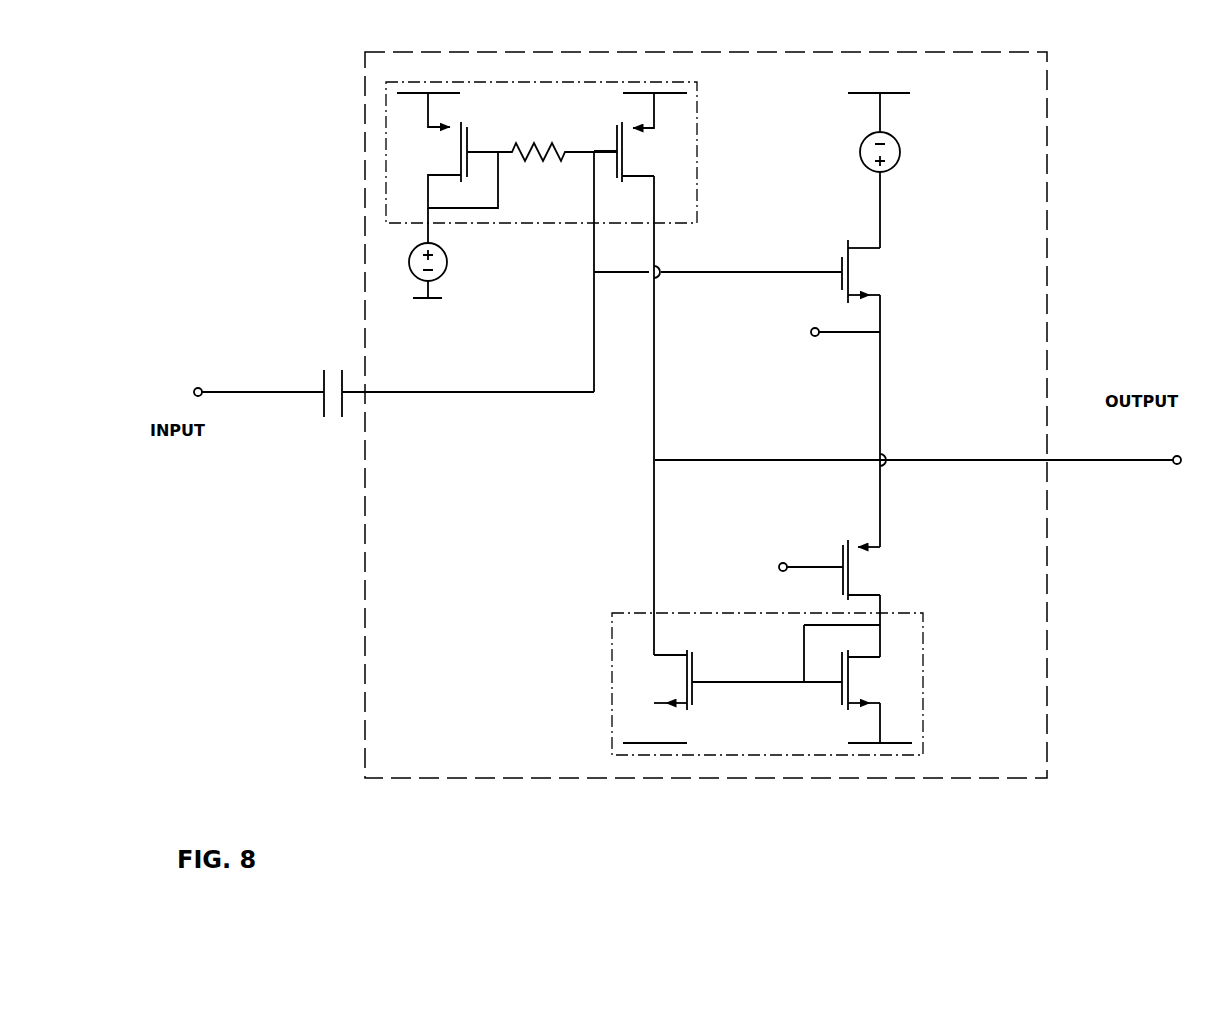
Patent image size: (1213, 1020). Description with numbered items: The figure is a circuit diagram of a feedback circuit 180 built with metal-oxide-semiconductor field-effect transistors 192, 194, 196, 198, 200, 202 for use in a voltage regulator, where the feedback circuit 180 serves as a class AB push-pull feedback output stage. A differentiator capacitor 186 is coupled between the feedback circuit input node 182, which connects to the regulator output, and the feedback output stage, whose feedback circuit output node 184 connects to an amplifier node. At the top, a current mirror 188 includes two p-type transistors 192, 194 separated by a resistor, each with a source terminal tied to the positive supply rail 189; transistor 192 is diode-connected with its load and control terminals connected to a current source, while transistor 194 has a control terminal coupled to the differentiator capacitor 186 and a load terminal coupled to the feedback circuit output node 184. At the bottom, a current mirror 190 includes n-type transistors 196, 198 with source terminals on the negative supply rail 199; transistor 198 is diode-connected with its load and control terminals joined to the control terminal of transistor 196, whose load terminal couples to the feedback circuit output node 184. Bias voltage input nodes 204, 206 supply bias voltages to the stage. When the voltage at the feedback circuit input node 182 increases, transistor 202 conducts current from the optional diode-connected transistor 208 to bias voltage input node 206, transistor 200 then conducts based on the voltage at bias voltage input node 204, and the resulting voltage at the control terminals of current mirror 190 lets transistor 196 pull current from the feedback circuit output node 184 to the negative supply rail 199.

The feedback circuit 180 is at (365, 708).
The feedback circuit input node 182 is at (198, 388).
The feedback circuit output node 184 is at (1175, 465).
The differentiator capacitor 186 is at (323, 405).
The current mirror 188 is at (386, 160).
The positive supply rail 189 is at (446, 88).
The current mirror 190 is at (613, 640).
The transistor 192 is at (486, 122).
The transistor 194 is at (676, 153).
The transistor 196 is at (708, 723).
The transistor 198 is at (888, 688).
The negative supply rail 199 is at (440, 298).
The transistor 200 is at (888, 570).
The transistor 202 is at (896, 274).
The bias voltage input node 204 is at (774, 552).
The bias voltage input node 206 is at (802, 322).
The diode-connected transistor 208 is at (920, 170).